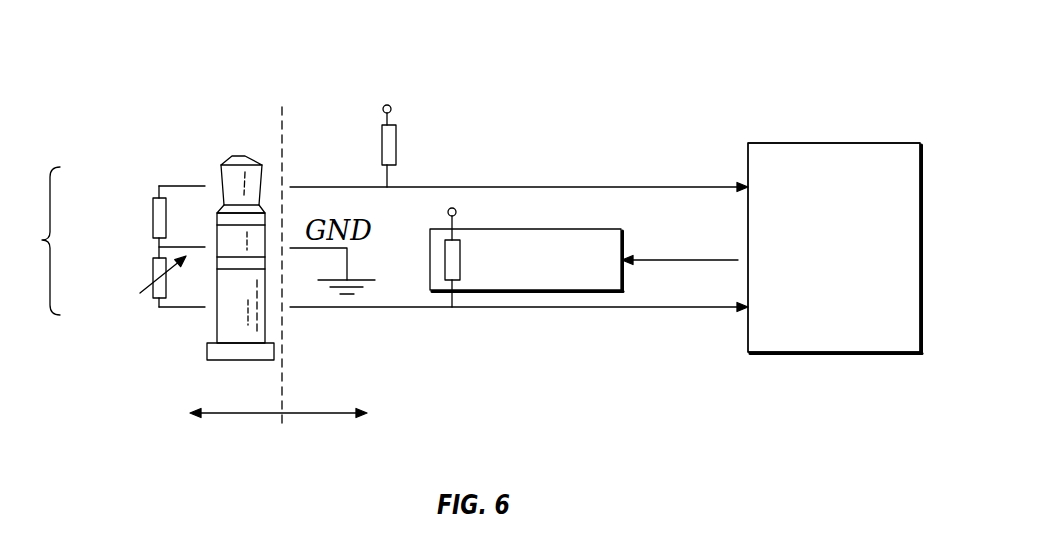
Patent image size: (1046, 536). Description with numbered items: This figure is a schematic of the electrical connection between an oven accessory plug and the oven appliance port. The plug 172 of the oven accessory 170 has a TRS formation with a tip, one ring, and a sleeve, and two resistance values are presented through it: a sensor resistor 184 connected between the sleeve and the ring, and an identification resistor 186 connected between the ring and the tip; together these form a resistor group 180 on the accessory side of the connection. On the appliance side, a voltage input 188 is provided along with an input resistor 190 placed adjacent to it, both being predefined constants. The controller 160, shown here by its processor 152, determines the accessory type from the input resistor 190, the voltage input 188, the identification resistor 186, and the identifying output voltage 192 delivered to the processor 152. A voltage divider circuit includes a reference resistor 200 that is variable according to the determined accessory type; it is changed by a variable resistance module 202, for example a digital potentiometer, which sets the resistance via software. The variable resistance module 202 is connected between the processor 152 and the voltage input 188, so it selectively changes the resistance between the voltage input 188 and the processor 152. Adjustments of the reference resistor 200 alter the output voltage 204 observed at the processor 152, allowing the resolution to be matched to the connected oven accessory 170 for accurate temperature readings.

The processor 152 is at (851, 267).
The controller 160 is at (402, 420).
The oven accessory 170 is at (129, 400).
The plug 172 is at (203, 157).
The sensor resistor network 180 is at (32, 241).
The sensor resistor 184 is at (157, 285).
The identification resistor 186 is at (152, 203).
The voltage input 188 is at (371, 62).
The input resistor 190 is at (398, 134).
The identifying output voltage 192 is at (650, 143).
The reference resistor 200 is at (443, 265).
The variable resistance module 202 is at (523, 295).
The output voltage 204 is at (654, 357).